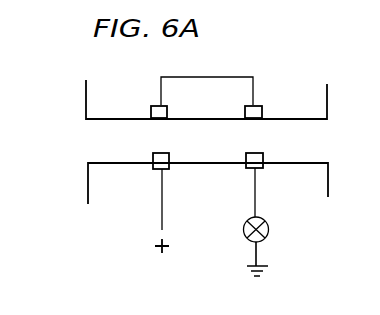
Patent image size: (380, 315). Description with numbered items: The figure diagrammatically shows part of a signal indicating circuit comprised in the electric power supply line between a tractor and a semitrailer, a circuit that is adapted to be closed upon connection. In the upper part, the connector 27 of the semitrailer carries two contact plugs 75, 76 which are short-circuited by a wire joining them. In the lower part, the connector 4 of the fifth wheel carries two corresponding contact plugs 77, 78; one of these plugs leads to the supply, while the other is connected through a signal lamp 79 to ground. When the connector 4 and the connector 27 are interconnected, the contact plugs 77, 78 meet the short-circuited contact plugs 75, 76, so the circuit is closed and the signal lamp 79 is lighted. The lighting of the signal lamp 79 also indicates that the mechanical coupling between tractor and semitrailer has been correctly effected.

The connector 27 is at (86, 96).
The contact plug 75 is at (151, 110).
The contact plug 76 is at (262, 111).
The connector 4 is at (88, 184).
The contact plug 77 is at (153, 165).
The contact plug 78 is at (246, 163).
The signal lamp 79 is at (244, 229).